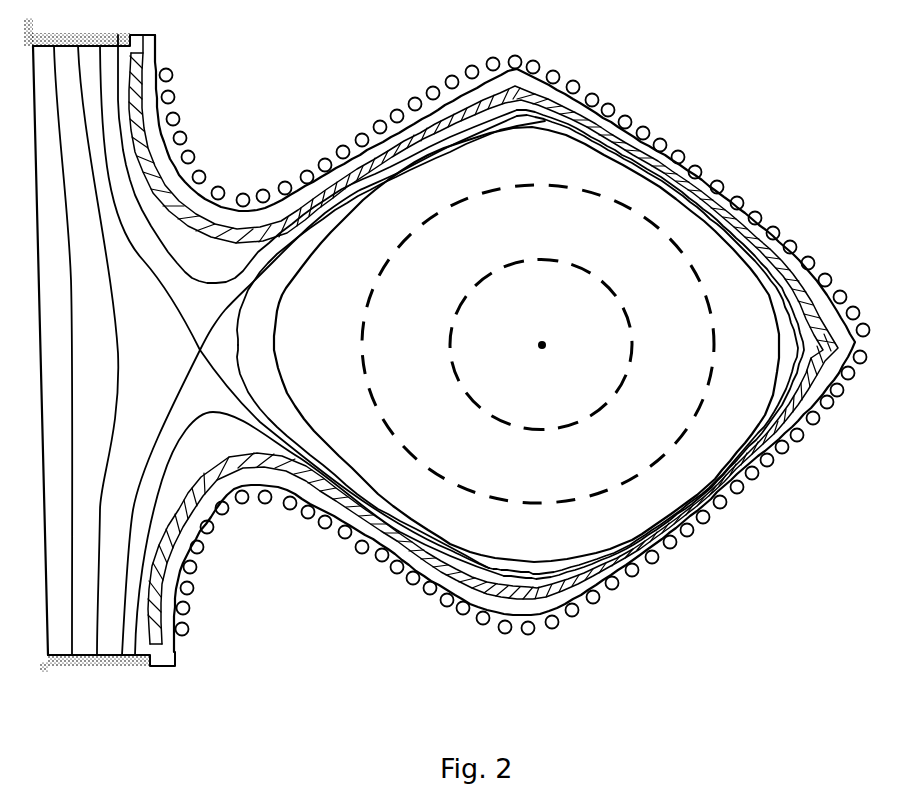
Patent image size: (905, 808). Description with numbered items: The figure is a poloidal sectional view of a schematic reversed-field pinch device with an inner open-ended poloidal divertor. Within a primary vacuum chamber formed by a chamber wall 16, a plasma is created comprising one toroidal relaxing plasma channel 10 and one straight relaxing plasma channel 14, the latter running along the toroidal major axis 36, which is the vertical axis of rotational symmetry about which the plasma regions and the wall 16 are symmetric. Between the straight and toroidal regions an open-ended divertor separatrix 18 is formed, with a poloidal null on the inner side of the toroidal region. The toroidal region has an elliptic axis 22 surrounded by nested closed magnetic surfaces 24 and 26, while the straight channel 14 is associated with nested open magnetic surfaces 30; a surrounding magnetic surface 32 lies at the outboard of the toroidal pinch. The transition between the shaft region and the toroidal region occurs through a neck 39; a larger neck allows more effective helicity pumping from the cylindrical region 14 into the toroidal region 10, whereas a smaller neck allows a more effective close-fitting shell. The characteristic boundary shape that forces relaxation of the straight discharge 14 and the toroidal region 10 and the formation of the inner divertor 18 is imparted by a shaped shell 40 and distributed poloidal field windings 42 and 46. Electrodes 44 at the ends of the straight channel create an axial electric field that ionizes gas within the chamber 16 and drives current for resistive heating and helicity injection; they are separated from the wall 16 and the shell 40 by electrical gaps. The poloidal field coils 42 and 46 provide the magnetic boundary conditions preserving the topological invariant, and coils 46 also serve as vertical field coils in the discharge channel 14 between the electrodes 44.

The toroidal relaxing plasma channel 10 is at (526, 344).
The straight relaxing plasma channel 14 is at (55, 350).
The chamber wall 16 is at (340, 517).
The open-ended divertor separatrix 18 is at (163, 405).
The elliptic axis 22 is at (572, 333).
The nested closed magnetic surface 24 is at (395, 253).
The nested closed magnetic surface 26 is at (575, 262).
The nested open magnetic surface 30 is at (122, 322).
The surrounding magnetic surface 32 is at (248, 422).
The toroidal major axis 36 is at (40, 512).
The neck 39 is at (317, 174).
The shaped shell 40 is at (603, 585).
The distributed poloidal field windings 42 is at (208, 538).
The electrodes 44 is at (110, 665).
The distributed poloidal field windings 46 is at (440, 600).